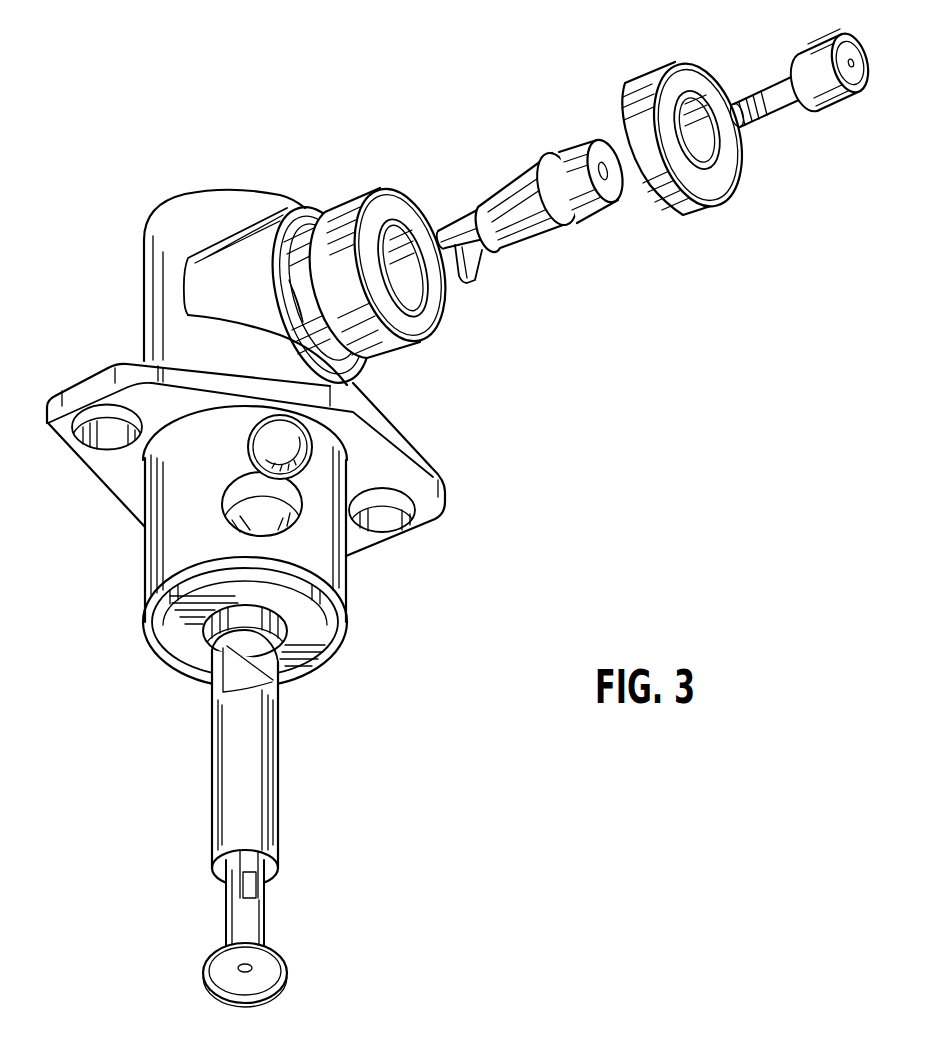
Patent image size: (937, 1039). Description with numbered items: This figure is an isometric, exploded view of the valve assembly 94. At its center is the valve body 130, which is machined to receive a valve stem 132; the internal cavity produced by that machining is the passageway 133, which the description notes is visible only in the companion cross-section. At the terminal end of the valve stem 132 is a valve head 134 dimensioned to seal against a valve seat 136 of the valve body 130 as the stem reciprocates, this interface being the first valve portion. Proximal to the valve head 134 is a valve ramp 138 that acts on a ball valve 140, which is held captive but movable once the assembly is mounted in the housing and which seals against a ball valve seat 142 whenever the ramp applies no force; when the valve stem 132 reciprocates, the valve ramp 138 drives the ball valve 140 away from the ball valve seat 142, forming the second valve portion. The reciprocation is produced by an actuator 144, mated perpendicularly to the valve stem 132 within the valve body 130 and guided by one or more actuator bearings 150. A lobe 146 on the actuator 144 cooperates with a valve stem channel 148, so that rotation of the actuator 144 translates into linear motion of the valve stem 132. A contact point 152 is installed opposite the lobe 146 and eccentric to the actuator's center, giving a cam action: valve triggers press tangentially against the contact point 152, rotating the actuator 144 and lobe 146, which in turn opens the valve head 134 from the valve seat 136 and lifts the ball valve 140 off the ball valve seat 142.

The valve assembly 94 is at (155, 91).
The valve body 130 is at (155, 219).
The valve stem 132 is at (206, 773).
The passageway 133 is at (170, 663).
The valve head 134 is at (288, 970).
The valve seat 136 is at (310, 662).
The valve ramp 138 is at (250, 890).
The ball valve 140 is at (247, 447).
The ball valve seat 142 is at (223, 528).
The actuator 144 is at (533, 221).
The lobe 146 is at (470, 284).
The valve stem channel 148 is at (247, 682).
The actuator bearing 150 is at (355, 200).
The contact point 152 is at (808, 50).